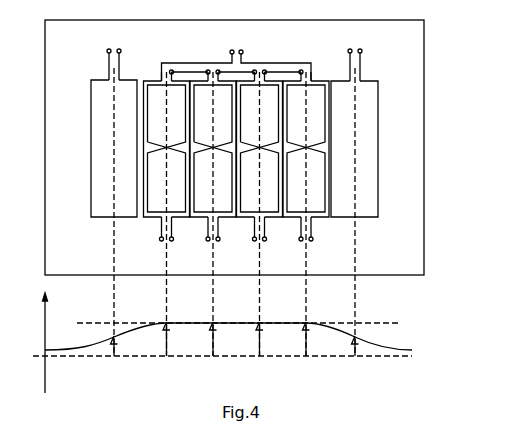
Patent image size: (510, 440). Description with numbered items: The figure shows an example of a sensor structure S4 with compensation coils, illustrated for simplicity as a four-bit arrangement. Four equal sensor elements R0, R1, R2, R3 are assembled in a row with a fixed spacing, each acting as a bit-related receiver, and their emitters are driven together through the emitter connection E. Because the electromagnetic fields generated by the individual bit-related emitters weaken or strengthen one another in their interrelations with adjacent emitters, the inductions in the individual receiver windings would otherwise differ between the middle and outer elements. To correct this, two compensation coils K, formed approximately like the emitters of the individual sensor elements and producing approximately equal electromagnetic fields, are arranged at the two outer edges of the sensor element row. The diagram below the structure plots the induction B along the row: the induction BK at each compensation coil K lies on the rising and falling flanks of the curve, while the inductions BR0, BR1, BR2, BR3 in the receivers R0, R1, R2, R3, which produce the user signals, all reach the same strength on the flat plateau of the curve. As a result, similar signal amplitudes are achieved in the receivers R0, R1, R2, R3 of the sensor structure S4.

The sensor structure S4 is at (398, 152).
The compensation coil K is at (234, 122).
The emitter E is at (237, 54).
The sensor element R0 is at (167, 168).
The sensor element R1 is at (213, 168).
The sensor element R2 is at (260, 168).
The sensor element R3 is at (306, 168).
The induction B is at (217, 343).
The induction at the compensation coil BK is at (237, 356).
The induction in sensor element R0 BR0 is at (164, 349).
The induction in sensor element R1 BR1 is at (213, 349).
The induction in sensor element R2 BR2 is at (260, 349).
The induction in sensor element R3 BR3 is at (307, 349).